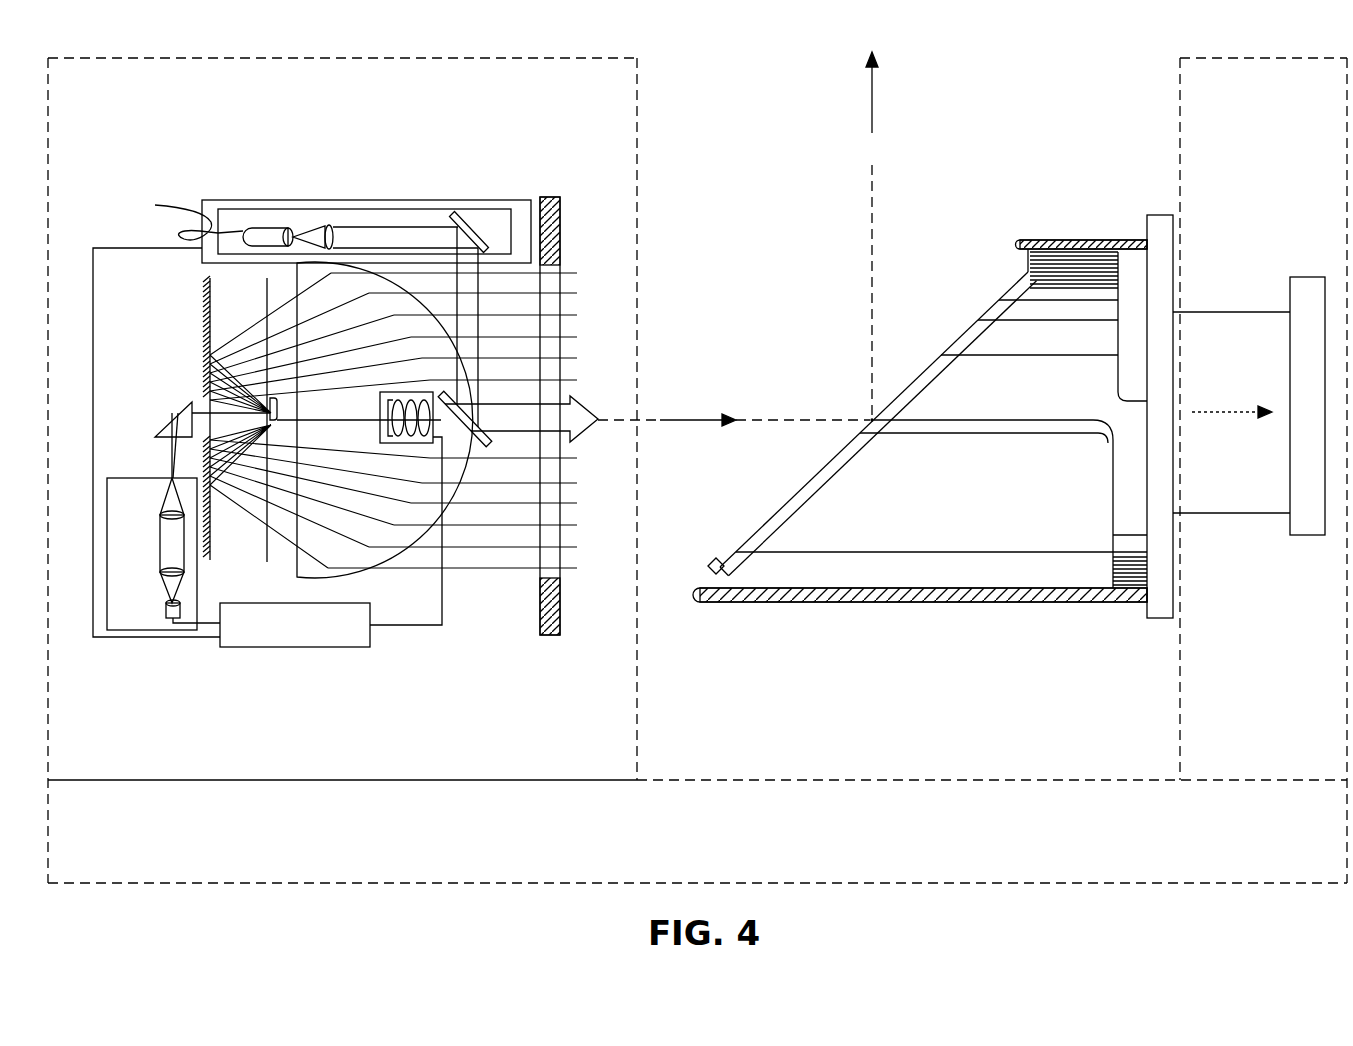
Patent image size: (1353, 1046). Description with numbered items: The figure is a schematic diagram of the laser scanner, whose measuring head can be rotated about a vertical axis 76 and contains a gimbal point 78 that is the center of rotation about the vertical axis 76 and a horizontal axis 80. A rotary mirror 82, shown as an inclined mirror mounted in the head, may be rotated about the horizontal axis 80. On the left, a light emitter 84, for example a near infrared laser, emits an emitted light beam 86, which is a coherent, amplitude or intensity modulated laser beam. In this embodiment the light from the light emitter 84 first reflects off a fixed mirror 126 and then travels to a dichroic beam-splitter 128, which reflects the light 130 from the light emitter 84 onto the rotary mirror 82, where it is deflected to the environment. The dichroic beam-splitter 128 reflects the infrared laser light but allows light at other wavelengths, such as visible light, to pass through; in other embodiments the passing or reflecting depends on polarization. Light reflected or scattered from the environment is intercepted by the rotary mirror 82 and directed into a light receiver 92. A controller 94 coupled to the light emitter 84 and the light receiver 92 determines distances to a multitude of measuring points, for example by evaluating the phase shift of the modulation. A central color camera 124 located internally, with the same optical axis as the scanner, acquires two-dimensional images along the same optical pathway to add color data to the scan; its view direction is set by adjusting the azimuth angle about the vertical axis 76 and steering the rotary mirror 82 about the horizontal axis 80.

The vertical axis 76 is at (874, 98).
The gimbal point 78 is at (866, 419).
The horizontal axis 80 is at (1227, 412).
The rotary mirror 82 is at (985, 318).
The light emitter 84 is at (270, 230).
The emitted light beam 86 is at (693, 419).
The light receiver 92 is at (135, 590).
The controller 94 is at (298, 648).
The central color camera 124 is at (402, 445).
The fixed mirror 126 is at (473, 230).
The dichroic beam-splitter 128 is at (463, 430).
The light 130 is at (465, 328).